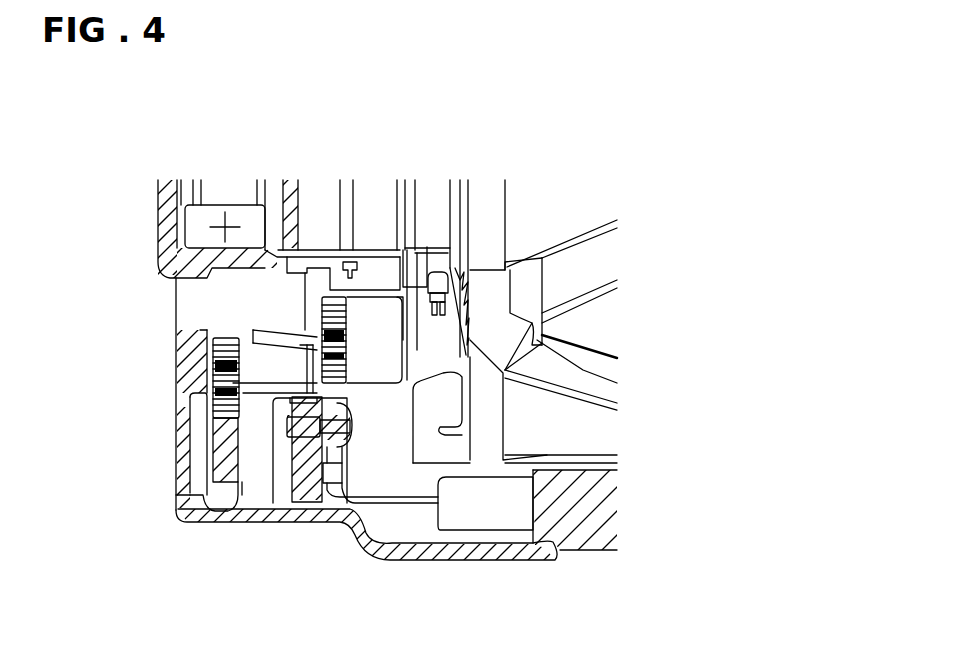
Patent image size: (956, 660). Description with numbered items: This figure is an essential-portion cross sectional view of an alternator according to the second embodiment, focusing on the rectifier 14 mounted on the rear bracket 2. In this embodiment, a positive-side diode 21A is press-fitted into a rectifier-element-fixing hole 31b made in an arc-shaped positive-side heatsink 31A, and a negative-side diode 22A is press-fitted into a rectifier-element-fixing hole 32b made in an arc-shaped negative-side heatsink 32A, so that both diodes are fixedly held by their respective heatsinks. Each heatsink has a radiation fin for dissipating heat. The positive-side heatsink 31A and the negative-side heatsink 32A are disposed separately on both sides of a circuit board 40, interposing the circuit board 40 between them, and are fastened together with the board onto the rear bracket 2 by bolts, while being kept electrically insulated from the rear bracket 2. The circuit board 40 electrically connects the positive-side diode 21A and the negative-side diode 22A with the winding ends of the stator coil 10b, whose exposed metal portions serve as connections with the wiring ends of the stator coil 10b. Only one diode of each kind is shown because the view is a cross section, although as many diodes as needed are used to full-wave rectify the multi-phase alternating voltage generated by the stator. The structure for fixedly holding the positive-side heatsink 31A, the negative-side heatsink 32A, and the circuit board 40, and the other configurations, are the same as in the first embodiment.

The positive-side heatsink 31A is at (372, 305).
The positive-side diode 21A is at (325, 313).
The rectifier 14 is at (212, 382).
The negative-side diode 22A is at (210, 417).
The rectifier-element-fixing hole 32b is at (273, 355).
The negative-side heatsink 32A is at (217, 515).
The circuit board 40 is at (287, 497).
The rectifier-element-fixing hole 31b is at (350, 373).
The stator coil 10b is at (462, 518).
The rear bracket 2 is at (537, 560).